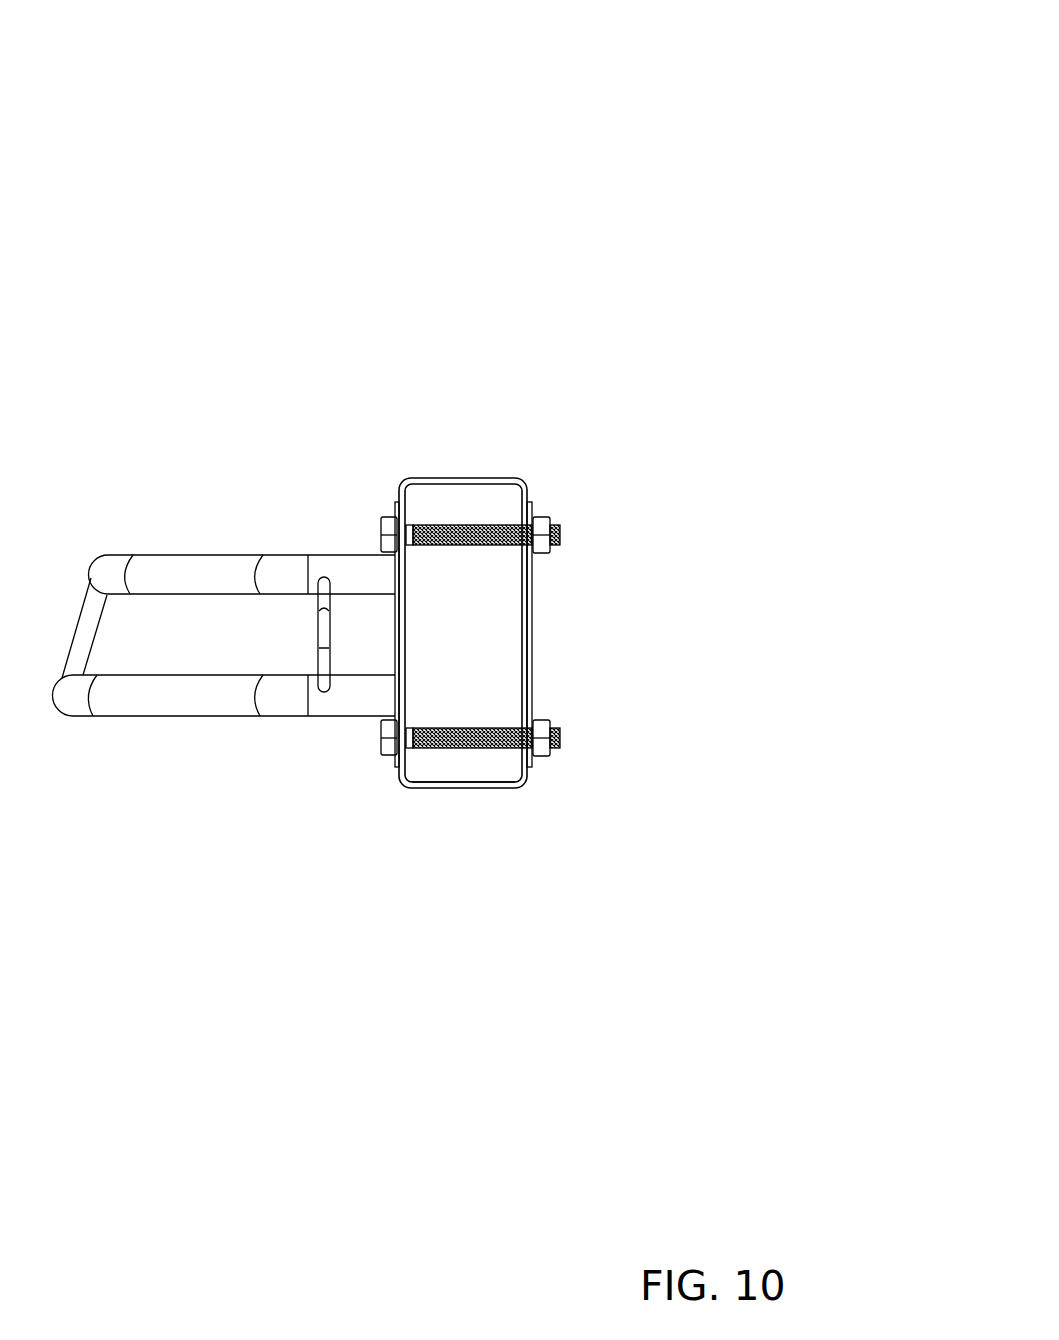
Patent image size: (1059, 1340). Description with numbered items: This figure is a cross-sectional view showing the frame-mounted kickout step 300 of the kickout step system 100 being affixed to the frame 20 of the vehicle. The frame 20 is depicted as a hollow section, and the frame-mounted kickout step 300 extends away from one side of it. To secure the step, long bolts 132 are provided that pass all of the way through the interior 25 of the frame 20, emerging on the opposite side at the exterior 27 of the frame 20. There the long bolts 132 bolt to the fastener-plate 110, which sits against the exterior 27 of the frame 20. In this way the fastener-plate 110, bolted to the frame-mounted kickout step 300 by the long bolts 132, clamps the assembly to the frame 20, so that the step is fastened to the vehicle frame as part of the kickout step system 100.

The kickout step system 100 is at (587, 70).
The frame-mounted kickout step 300 is at (400, 790).
The frame 20 is at (526, 479).
The interior 25 is at (453, 772).
The exterior 27 is at (392, 470).
The long bolts 132 is at (472, 546).
The fastener-plate 110 is at (568, 808).